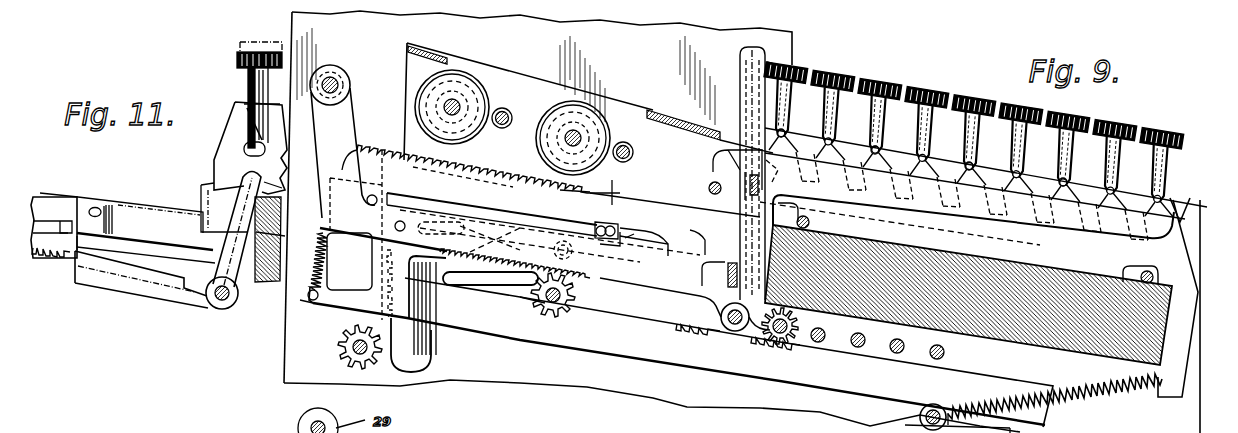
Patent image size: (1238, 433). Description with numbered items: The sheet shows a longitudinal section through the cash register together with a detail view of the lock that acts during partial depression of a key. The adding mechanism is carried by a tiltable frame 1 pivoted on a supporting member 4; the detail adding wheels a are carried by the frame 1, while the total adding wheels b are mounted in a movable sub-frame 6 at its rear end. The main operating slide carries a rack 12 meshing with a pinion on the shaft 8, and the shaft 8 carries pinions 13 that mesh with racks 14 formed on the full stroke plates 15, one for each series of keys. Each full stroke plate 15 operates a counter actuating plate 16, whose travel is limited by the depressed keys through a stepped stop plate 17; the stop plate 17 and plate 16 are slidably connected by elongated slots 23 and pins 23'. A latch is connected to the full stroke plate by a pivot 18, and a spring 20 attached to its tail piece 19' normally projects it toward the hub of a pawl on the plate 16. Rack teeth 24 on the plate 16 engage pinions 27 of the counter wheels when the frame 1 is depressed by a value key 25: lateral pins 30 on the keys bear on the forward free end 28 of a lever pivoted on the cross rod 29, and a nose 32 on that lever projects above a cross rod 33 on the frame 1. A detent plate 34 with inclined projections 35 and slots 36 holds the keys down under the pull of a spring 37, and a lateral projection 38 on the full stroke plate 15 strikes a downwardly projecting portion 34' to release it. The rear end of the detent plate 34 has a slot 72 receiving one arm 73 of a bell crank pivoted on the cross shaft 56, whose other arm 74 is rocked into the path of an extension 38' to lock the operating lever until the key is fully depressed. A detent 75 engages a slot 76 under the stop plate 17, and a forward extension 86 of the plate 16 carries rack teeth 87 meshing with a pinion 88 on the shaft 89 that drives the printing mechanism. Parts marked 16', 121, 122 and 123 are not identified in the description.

In FIG. 9, the tiltable frame 1 is at (662, 112).
In FIG. 11, the supporting member 4 is at (265, 272).
In FIG. 9, the supporting member 4 is at (1050, 318).
In FIG. 9, the movable sub-frame 6 is at (508, 98).
In FIG. 9, the shaft 8 is at (552, 320).
In FIG. 9, the rack 12 is at (790, 55).
In FIG. 9, the pinions 13 is at (538, 306).
In FIG. 11, the racks 14 is at (36, 258).
In FIG. 9, the racks 14 is at (560, 284).
In FIG. 11, the full stroke plates 15 is at (50, 205).
In FIG. 9, the full stroke plates 15 is at (434, 305).
In FIG. 9, the counter actuating plate 16 is at (675, 198).
In FIG. 9, the arm 16' is at (315, 308).
In FIG. 11, the stop plate 17 is at (140, 216).
In FIG. 9, the stop plate 17 is at (668, 244).
In FIG. 9, the pivot 18 is at (402, 233).
In FIG. 9, the tail piece 19' is at (361, 235).
In FIG. 9, the spring 20 is at (328, 284).
In FIG. 11, the elongated slots 23 is at (110, 207).
In FIG. 9, the elongated slots 23 is at (634, 237).
In FIG. 9, the pins 23' is at (648, 225).
In FIG. 9, the rack teeth 24 is at (590, 192).
In FIG. 11, the value keys 25 is at (248, 88).
In FIG. 9, the value keys 25 is at (920, 92).
In FIG. 9, the pinions 27 is at (462, 95).
In FIG. 9, the forward free end of lever 28 is at (830, 197).
In FIG. 9, the cross rod 29 is at (338, 82).
In FIG. 11, the lateral pins 30 is at (246, 119).
In FIG. 9, the lateral pins 30 is at (824, 140).
In FIG. 9, the nose 32 is at (718, 159).
In FIG. 9, the cross rod 33 is at (709, 188).
In FIG. 11, the detent plate 34 is at (229, 138).
In FIG. 9, the detent plate 34 is at (1191, 191).
In FIG. 11, the downwardly projecting portion 34' is at (200, 198).
In FIG. 9, the downwardly projecting portion 34' is at (689, 234).
In FIG. 11, the inclined projections 35 is at (246, 142).
In FIG. 9, the inclined projections 35 is at (967, 164).
In FIG. 9, the slots or recesses 36 is at (1100, 228).
In FIG. 9, the spring 37 is at (1085, 405).
In FIG. 11, the lateral projection 38 is at (145, 236).
In FIG. 9, the lateral projection 38 is at (502, 216).
In FIG. 11, the extension 38' is at (146, 249).
In FIG. 9, the extension 38' is at (550, 242).
In FIG. 11, the cross shaft 56 is at (230, 305).
In FIG. 9, the cross shaft 56 is at (734, 334).
In FIG. 11, the recess or slot 72 is at (282, 188).
In FIG. 9, the recess or slot 72 is at (778, 170).
In FIG. 11, the arm 73 is at (285, 236).
In FIG. 9, the arm 73 is at (803, 219).
In FIG. 11, the arm 74 is at (138, 286).
In FIG. 9, the arm 74 is at (620, 308).
In FIG. 9, the detent 75 is at (702, 279).
In FIG. 9, the slot 76 is at (740, 280).
In FIG. 9, the forward extension 86 is at (660, 352).
In FIG. 9, the rack teeth 87 is at (692, 338).
In FIG. 9, the pinion 88 is at (774, 348).
In FIG. 9, the shaft 89 is at (852, 336).
In FIG. 9, the shaft 121 is at (352, 358).
In FIG. 9, the gear 122 is at (343, 345).
In FIG. 9, the tongue 123 is at (436, 346).
In FIG. 9, the detail adding wheels a is at (612, 143).
In FIG. 9, the total adding wheels b is at (470, 132).